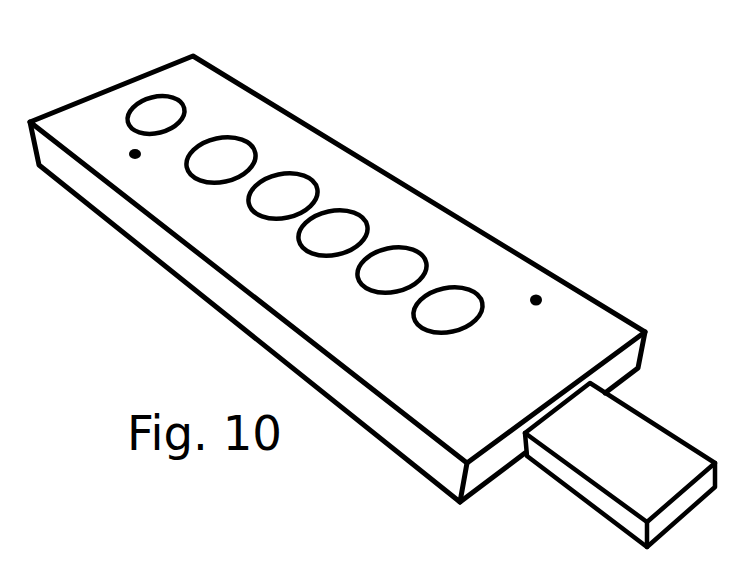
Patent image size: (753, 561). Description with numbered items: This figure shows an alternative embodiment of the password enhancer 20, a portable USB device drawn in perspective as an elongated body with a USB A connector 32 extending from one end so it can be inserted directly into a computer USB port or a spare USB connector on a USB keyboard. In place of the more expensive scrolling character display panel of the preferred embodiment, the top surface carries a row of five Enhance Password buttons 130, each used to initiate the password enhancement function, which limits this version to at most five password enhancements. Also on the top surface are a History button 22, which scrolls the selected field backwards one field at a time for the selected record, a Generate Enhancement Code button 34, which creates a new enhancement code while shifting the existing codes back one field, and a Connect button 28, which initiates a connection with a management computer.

The password enhancer 20 is at (78, 75).
The History button 22 is at (160, 113).
The Enhance Password buttons 130 is at (233, 153).
The Generate Enhancement Code button 34 is at (135, 154).
The Connect button 28 is at (536, 300).
The USB A connector 32 is at (662, 460).